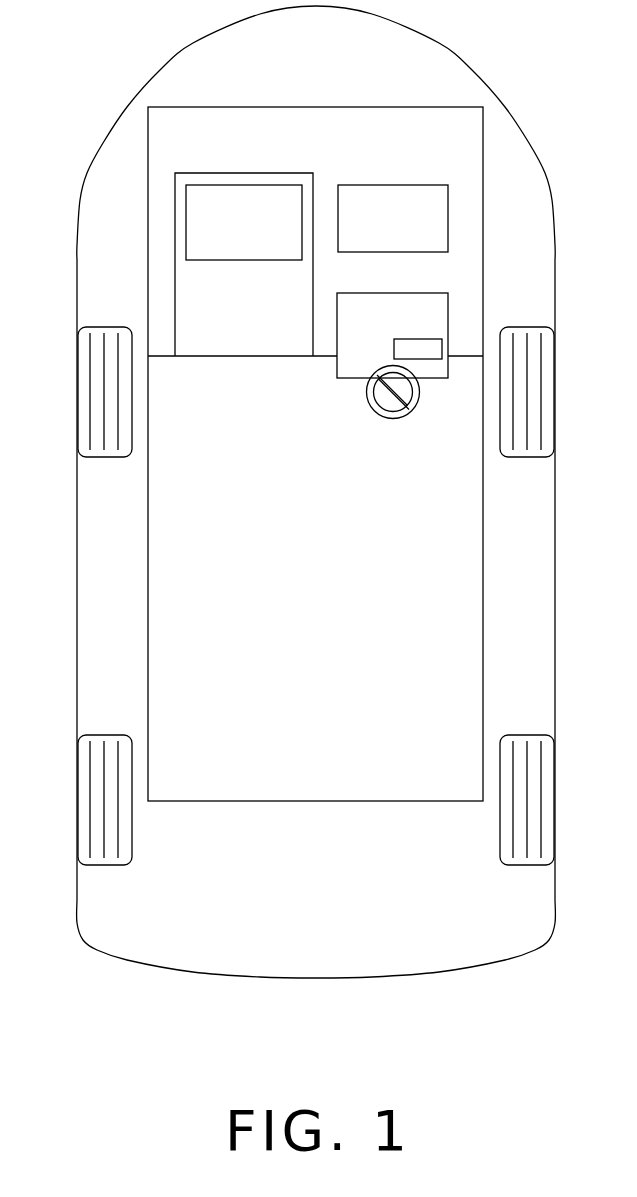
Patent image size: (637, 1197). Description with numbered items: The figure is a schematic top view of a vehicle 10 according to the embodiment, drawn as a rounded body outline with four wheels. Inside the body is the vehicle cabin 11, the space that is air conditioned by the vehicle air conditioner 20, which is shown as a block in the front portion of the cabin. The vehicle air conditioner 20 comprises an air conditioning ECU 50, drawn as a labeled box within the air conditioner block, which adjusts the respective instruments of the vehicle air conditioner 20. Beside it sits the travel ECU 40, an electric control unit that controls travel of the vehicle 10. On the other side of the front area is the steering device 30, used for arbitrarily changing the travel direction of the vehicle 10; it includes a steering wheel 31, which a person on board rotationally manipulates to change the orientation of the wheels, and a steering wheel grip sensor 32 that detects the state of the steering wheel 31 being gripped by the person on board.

The vehicle 10 is at (518, 58).
The vehicle cabin 11 is at (334, 595).
The vehicle air conditioner 20 is at (195, 287).
The steering device 30 is at (428, 312).
The steering wheel 31 is at (393, 419).
The steering wheel grip sensor 32 is at (430, 348).
The travel ECU 40 is at (433, 220).
The air conditioning ECU 50 is at (186, 213).